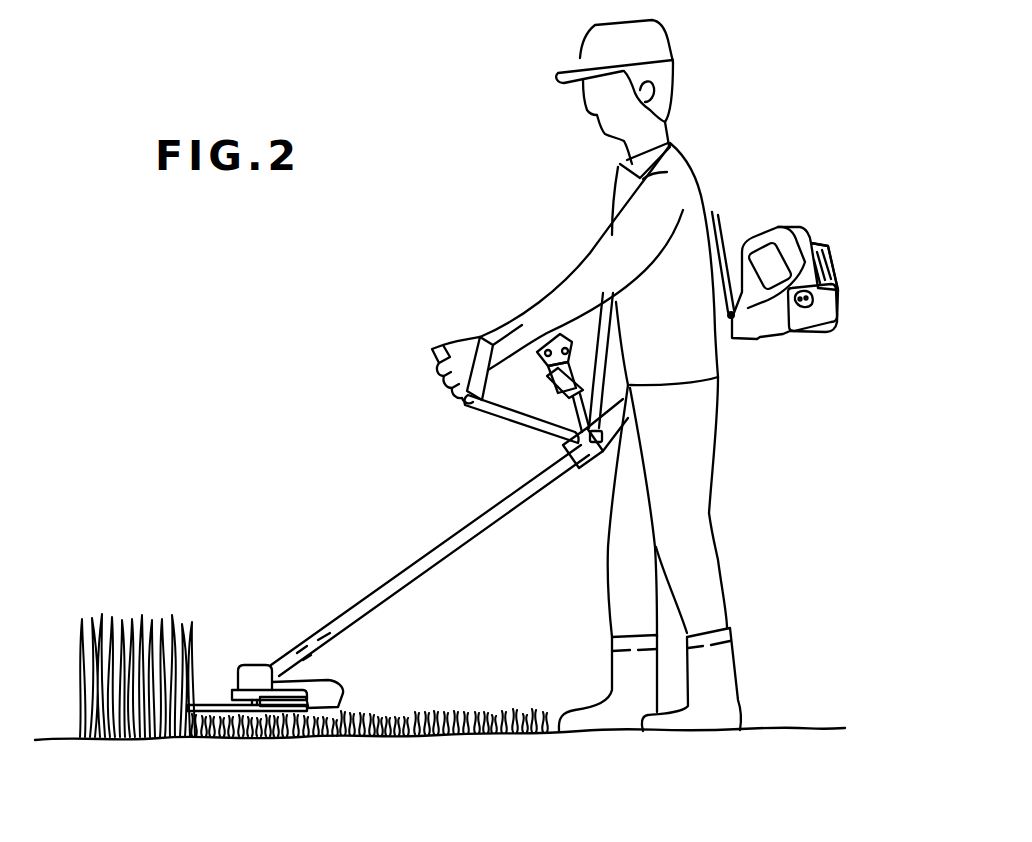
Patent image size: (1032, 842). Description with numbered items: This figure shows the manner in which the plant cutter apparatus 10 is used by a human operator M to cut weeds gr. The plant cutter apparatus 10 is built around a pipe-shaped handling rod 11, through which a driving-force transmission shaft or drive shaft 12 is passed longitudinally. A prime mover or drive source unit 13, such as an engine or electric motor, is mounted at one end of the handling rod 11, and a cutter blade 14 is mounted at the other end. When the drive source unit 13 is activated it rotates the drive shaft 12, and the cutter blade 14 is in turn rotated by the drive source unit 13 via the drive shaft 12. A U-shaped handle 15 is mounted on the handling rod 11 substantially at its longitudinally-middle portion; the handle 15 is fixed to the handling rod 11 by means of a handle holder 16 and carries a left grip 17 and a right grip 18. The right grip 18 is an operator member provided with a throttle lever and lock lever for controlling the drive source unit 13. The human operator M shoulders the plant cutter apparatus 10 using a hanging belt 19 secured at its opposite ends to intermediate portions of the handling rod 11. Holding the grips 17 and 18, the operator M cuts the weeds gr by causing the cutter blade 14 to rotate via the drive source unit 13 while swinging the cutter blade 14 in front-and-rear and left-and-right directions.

The human operator M is at (538, 119).
The weeds gr is at (136, 594).
The plant cutter apparatus 10 is at (539, 402).
The handling rod 11 is at (314, 639).
The drive shaft 12 is at (338, 638).
The drive source unit 13 is at (821, 322).
The cutter blade 14 is at (204, 695).
The U-shaped handle 15 is at (497, 420).
The handle holder 16 is at (582, 462).
The left grip 17 is at (432, 355).
The right grip 18 is at (536, 374).
The hanging belt 19 is at (599, 319).